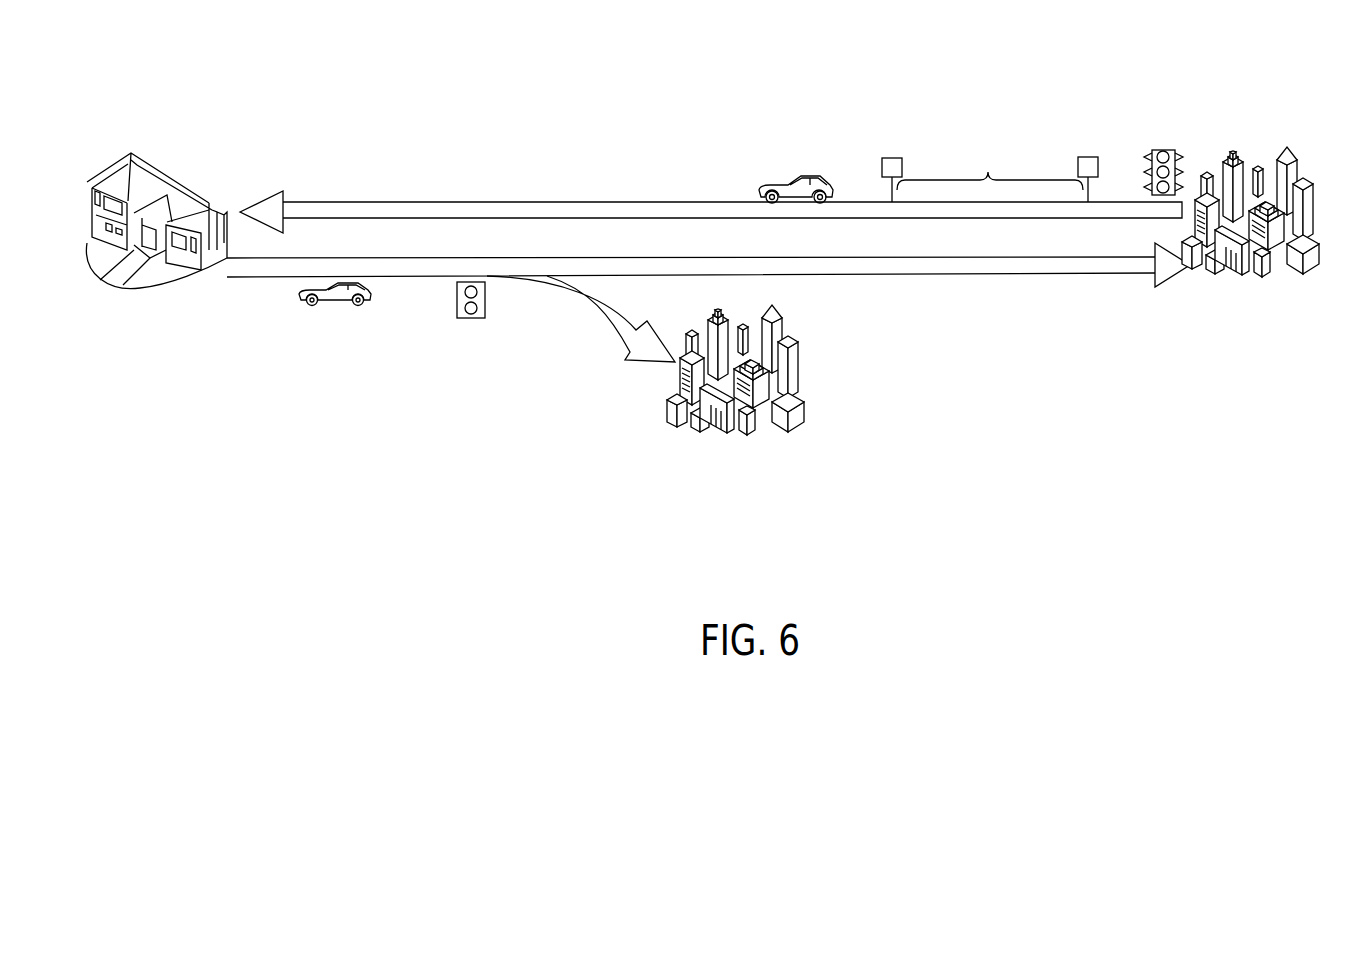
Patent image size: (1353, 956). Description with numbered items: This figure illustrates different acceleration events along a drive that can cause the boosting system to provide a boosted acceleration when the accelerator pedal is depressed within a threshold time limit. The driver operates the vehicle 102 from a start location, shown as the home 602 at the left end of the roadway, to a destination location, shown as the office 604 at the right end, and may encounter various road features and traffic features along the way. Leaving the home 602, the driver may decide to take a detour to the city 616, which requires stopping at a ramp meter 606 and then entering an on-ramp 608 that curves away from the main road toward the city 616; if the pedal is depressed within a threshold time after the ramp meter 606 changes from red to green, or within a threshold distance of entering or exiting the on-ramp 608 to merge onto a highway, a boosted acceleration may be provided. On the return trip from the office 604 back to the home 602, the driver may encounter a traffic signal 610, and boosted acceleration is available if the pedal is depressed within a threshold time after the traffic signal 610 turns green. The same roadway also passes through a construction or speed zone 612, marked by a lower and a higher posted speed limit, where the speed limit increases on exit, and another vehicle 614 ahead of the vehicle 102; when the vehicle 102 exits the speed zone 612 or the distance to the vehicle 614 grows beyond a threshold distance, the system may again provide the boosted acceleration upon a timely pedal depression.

The vehicle 102 is at (334, 304).
The home 602 is at (151, 167).
The office 604 is at (1237, 152).
The ramp meter 606 is at (468, 320).
The on-ramp 608 is at (582, 307).
The traffic signal 610 is at (1163, 150).
The construction or speed zone 612 is at (990, 165).
The another vehicle 614 is at (793, 175).
The city 616 is at (743, 437).